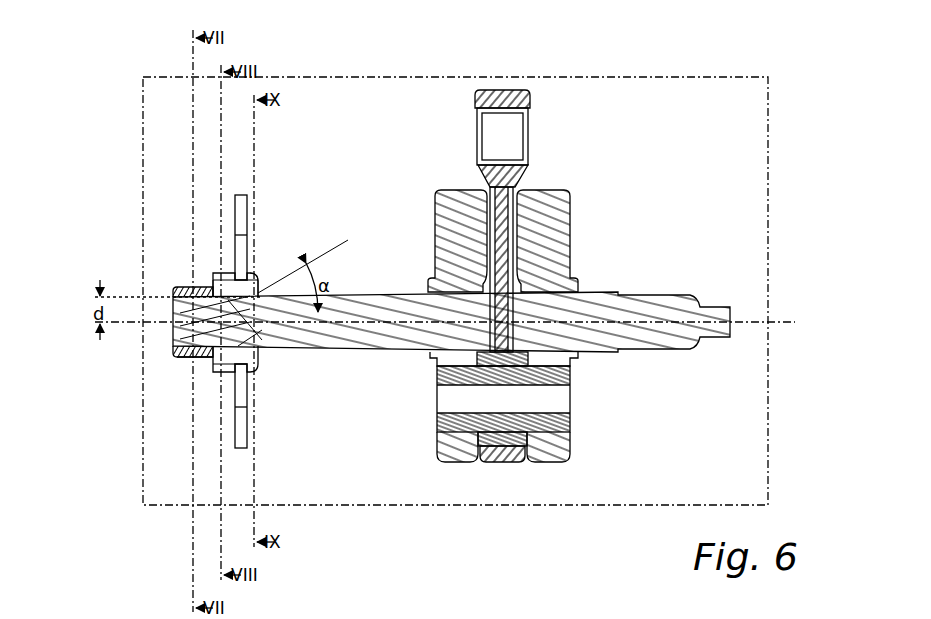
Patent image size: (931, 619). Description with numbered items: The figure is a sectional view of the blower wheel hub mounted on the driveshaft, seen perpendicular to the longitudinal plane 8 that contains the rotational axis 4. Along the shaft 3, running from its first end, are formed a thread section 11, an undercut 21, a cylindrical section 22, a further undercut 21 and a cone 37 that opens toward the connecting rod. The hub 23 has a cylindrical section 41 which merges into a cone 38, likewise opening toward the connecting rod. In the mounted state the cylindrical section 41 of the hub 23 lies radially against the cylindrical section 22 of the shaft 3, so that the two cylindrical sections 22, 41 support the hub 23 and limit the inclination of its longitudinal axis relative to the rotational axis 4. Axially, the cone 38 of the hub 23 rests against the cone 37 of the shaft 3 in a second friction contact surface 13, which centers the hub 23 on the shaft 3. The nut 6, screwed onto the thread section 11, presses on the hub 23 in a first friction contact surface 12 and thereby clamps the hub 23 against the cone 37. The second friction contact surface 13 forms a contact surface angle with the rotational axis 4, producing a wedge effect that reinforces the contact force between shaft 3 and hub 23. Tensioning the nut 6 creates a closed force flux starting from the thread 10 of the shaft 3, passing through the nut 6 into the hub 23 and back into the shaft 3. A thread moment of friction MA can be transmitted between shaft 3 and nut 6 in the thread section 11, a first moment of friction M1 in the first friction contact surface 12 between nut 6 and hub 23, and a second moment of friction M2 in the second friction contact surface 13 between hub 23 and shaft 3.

The shaft 3 is at (382, 293).
The rotational axis 4 is at (137, 297).
The nut 6 is at (188, 287).
The longitudinal plane 8 is at (292, 77).
The thread 10 is at (178, 350).
The thread section 11 is at (188, 354).
The first friction contact surface 12 is at (215, 296).
The second friction contact surface 13 is at (259, 293).
The undercut 21 is at (205, 358).
The cylindrical section 22 is at (226, 296).
The hub 23 is at (258, 293).
The cone 37 is at (228, 298).
The cone 38 is at (240, 334).
The cylindrical section 41 is at (226, 364).
The thread moment of friction MA is at (197, 353).
The first moment of friction M1 is at (220, 356).
The second moment of friction M2 is at (236, 353).